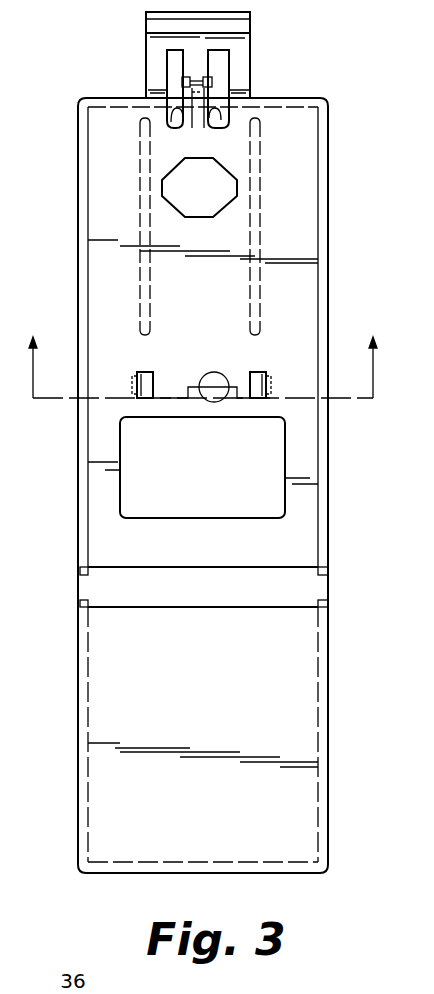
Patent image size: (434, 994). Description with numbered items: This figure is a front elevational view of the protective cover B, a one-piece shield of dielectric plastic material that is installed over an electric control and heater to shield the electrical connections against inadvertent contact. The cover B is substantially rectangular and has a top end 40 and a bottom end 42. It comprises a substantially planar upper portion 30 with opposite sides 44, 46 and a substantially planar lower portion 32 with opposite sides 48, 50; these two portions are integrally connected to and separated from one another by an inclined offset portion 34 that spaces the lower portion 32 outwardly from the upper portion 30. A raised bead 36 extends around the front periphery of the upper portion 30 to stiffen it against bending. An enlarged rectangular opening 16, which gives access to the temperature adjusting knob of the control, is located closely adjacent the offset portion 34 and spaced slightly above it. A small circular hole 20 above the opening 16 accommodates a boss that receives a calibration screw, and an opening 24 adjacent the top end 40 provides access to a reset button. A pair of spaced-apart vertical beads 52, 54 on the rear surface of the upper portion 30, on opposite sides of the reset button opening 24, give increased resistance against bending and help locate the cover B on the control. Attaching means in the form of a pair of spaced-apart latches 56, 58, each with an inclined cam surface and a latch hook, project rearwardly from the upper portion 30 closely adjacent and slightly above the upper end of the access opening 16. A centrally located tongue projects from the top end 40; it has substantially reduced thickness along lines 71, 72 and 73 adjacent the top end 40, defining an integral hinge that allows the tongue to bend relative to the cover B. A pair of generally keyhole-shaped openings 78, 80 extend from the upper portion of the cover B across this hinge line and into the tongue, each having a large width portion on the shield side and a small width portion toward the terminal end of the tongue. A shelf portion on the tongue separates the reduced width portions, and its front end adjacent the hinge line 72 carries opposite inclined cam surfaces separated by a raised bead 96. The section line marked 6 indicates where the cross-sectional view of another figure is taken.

The rectangular opening 16 is at (185, 508).
The circular hole 20 is at (210, 380).
The reset button opening 24 is at (205, 213).
The upper portion 30 is at (287, 367).
The lower portion 32 is at (298, 725).
The inclined offset portion 34 is at (308, 593).
The raised bead 36 is at (83, 270).
The top end 40 is at (316, 97).
The bottom end 42 is at (297, 873).
The side of upper portion 44 is at (80, 215).
The side of upper portion 46 is at (328, 200).
The side of lower portion 48 is at (80, 716).
The side of lower portion 50 is at (332, 782).
The vertical bead 52 is at (140, 168).
The vertical bead 54 is at (258, 190).
The latch 56 is at (150, 372).
The latch 58 is at (252, 375).
The line of reduced thickness 71 is at (150, 93).
The line of reduced thickness 72 is at (198, 93).
The line of reduced thickness 73 is at (246, 93).
The keyhole-shaped opening 78 is at (178, 120).
The keyhole-shaped opening 80 is at (220, 115).
The raised bead 96 is at (201, 78).
The protective cover B is at (330, 540).
The section line 6- 6 is at (203, 354).